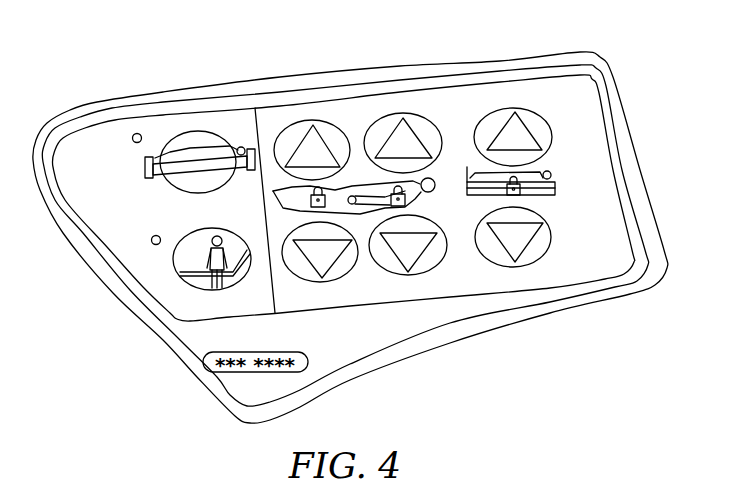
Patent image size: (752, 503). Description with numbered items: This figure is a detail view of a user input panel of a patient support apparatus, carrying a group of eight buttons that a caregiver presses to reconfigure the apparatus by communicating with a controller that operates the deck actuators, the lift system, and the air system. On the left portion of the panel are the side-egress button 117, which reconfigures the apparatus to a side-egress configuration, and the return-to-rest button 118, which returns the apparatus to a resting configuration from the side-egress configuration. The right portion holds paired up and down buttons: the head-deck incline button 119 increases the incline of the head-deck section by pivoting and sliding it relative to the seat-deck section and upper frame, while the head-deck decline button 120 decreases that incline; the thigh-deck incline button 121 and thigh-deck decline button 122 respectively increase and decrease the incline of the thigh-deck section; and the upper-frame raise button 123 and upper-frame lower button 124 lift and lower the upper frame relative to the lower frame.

The side-egress button 117 is at (211, 221).
The return-to-rest button 118 is at (189, 124).
The head-deck incline button 119 is at (397, 105).
The head-deck decline button 120 is at (403, 287).
The thigh-deck incline button 121 is at (305, 113).
The thigh-deck decline button 122 is at (325, 292).
The upper-frame raise button 123 is at (502, 100).
The upper-frame lower button 124 is at (563, 237).